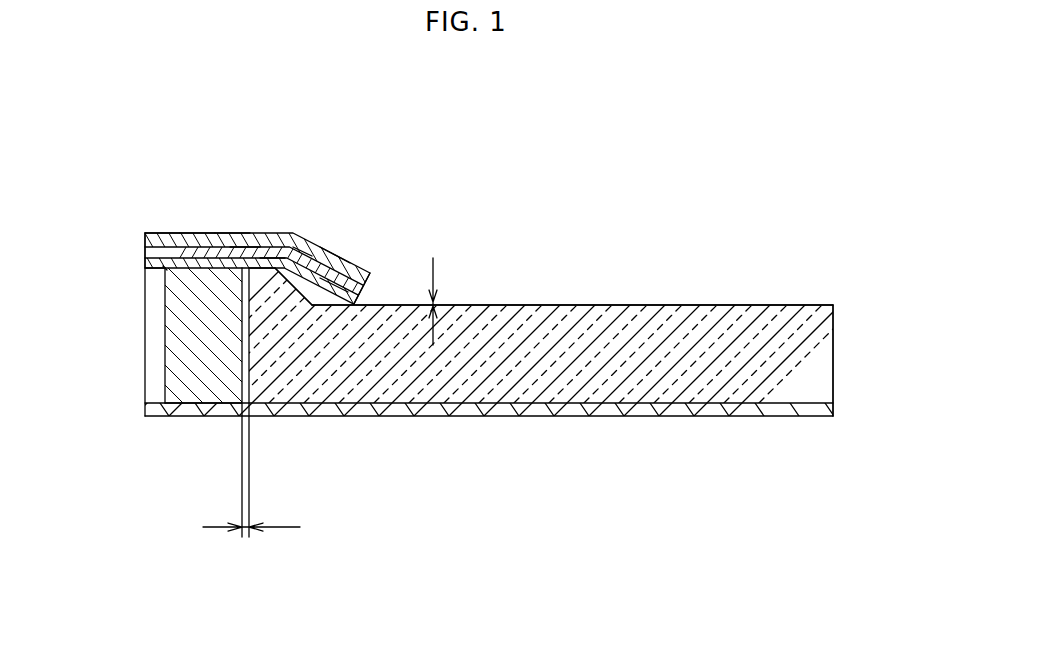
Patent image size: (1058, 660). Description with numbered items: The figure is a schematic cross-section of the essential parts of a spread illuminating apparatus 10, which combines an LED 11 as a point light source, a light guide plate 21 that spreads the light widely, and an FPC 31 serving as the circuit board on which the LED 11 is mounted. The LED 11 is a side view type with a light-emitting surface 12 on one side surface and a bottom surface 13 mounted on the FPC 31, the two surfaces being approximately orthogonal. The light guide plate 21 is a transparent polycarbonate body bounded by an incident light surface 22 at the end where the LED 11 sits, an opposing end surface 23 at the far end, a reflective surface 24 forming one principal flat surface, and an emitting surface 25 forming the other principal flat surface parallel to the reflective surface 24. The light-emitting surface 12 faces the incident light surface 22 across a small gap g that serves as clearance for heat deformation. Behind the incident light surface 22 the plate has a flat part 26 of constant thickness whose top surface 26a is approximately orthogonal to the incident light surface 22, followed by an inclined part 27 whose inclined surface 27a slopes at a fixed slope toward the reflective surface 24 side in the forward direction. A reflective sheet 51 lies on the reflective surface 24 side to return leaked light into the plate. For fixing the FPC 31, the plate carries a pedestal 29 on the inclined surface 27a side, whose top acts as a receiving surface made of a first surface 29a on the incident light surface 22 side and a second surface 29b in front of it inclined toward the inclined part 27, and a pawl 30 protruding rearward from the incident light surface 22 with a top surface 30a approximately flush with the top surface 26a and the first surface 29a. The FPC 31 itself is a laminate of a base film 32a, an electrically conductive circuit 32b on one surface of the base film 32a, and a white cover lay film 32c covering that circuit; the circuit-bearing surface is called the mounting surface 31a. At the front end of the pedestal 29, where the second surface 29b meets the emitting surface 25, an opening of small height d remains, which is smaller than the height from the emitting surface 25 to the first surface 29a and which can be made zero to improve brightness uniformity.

The spread illuminating apparatus 10 is at (741, 193).
The LED 11 is at (205, 402).
The light-emitting surface 12 is at (522, 388).
The bottom surface 13 is at (243, 243).
The light guide plate 21 is at (616, 372).
The incident light surface 22 is at (243, 358).
The opposing end surface 23 is at (837, 378).
The reflective surface 24 is at (479, 443).
The emitting surface 25 is at (651, 305).
The flat part 26 is at (262, 363).
The top surface 26a is at (272, 252).
The inclined part 27 is at (290, 342).
The inclined surface 27a is at (356, 262).
The pedestal 29 is at (340, 252).
The first surface 29a is at (305, 243).
The second surface 29b is at (348, 285).
The pawl 30 is at (110, 324).
The top surface 30a is at (143, 266).
The FPC 31 is at (253, 147).
The mounting surface 31a is at (165, 270).
The base film 32a is at (152, 233).
The electrically conductive circuit 32b is at (180, 233).
The white cover lay film 32c is at (206, 233).
The reflective sheet 51 is at (700, 410).